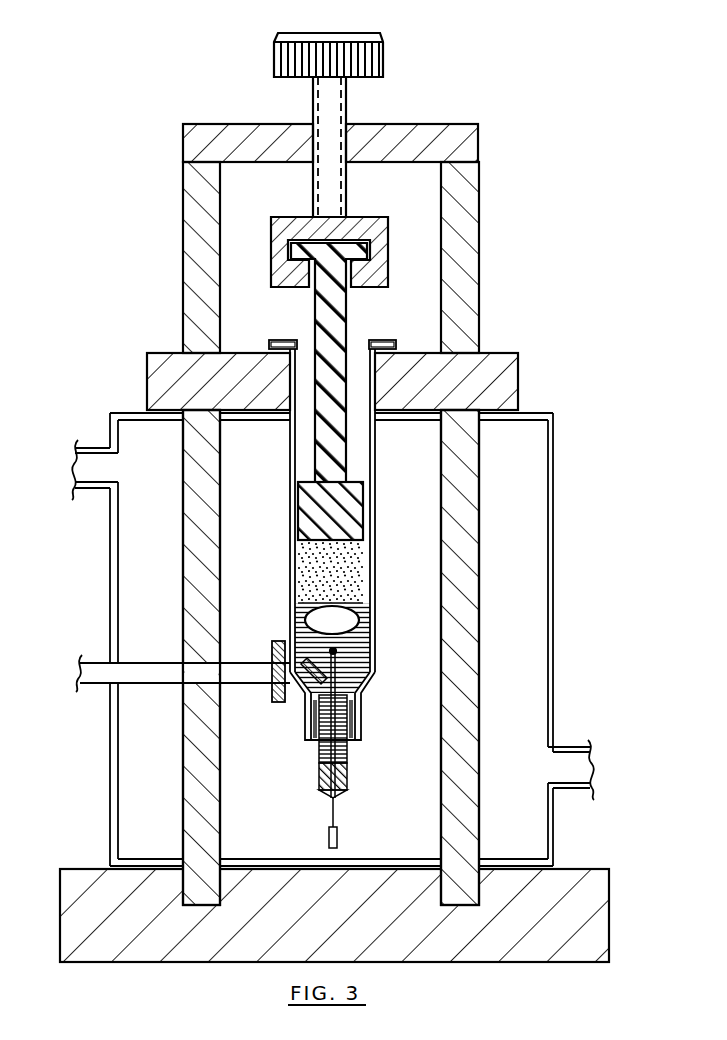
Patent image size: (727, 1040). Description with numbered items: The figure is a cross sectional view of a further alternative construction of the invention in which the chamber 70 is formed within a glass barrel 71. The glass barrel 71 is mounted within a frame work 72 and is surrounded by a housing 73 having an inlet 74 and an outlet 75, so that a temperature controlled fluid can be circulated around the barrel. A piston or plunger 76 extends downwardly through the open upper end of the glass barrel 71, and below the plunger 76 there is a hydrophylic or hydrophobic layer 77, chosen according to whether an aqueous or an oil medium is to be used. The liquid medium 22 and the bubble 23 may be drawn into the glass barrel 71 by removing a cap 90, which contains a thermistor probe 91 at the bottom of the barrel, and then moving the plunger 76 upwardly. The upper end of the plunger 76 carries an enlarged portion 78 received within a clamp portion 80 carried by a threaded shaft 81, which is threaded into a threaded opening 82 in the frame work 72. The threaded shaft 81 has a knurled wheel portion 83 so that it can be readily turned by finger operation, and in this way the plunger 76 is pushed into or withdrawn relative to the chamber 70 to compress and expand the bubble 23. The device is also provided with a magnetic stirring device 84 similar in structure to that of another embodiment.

The liquid medium 22 is at (357, 663).
The bubble 23 is at (345, 622).
The chamber 70 is at (358, 642).
The glass barrel 71 is at (368, 546).
The frame work 72 is at (487, 272).
The housing 73 is at (555, 555).
The inlet 74 is at (563, 747).
The outlet 75 is at (90, 447).
The plunger 76 is at (345, 482).
The hydrophylic or hydrophobic layer 77 is at (357, 578).
The enlarged portion 78 is at (356, 253).
The clamp portion 80 is at (365, 225).
The threaded shaft 81 is at (350, 118).
The threaded opening 82 is at (313, 125).
The knurled wheel portion 83 is at (343, 33).
The magnetic stirring device 84 is at (281, 708).
The cap 90 is at (348, 778).
The thermistor probe 91 is at (345, 742).